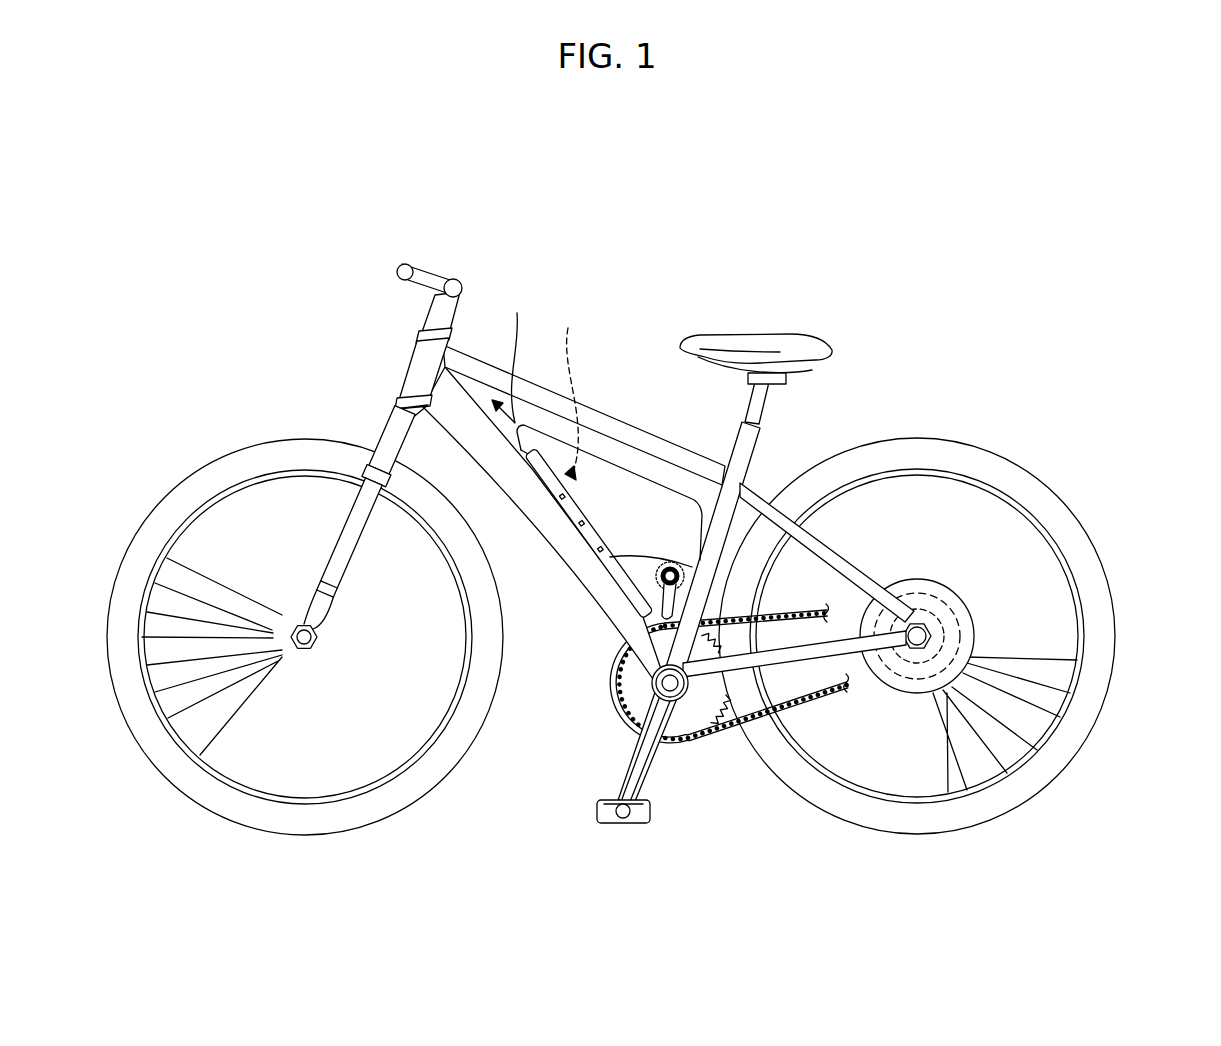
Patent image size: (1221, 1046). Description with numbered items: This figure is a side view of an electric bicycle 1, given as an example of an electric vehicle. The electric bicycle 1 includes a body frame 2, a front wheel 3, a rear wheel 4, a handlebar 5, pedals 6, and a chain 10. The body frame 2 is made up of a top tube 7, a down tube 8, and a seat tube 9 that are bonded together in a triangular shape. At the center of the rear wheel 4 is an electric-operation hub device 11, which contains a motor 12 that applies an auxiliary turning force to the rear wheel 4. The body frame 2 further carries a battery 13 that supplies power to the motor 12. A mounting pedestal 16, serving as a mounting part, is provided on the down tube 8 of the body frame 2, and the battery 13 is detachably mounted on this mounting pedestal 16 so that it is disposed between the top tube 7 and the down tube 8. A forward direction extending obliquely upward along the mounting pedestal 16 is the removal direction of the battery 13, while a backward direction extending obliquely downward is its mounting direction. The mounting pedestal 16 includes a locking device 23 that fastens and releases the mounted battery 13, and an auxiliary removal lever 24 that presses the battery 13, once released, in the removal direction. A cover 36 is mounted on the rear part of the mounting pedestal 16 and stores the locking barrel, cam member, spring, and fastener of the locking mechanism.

The electric bicycle 1 is at (870, 350).
The body frame 2 is at (654, 484).
The front wheel 3 is at (192, 488).
The rear wheel 4 is at (950, 636).
The handlebar 5 is at (425, 268).
The pedals 6 is at (650, 812).
The top tube 7 is at (615, 420).
The down tube 8 is at (575, 552).
The seat tube 9 is at (742, 460).
The chain 10 is at (708, 733).
The electric-operation hub device 11 is at (1020, 569).
The motor 12 is at (960, 636).
The battery 13 is at (617, 480).
The mounting pedestal 16 is at (553, 483).
The locking device 23 is at (672, 566).
The auxiliary removal lever 24 is at (662, 607).
The cover 36 is at (628, 535).